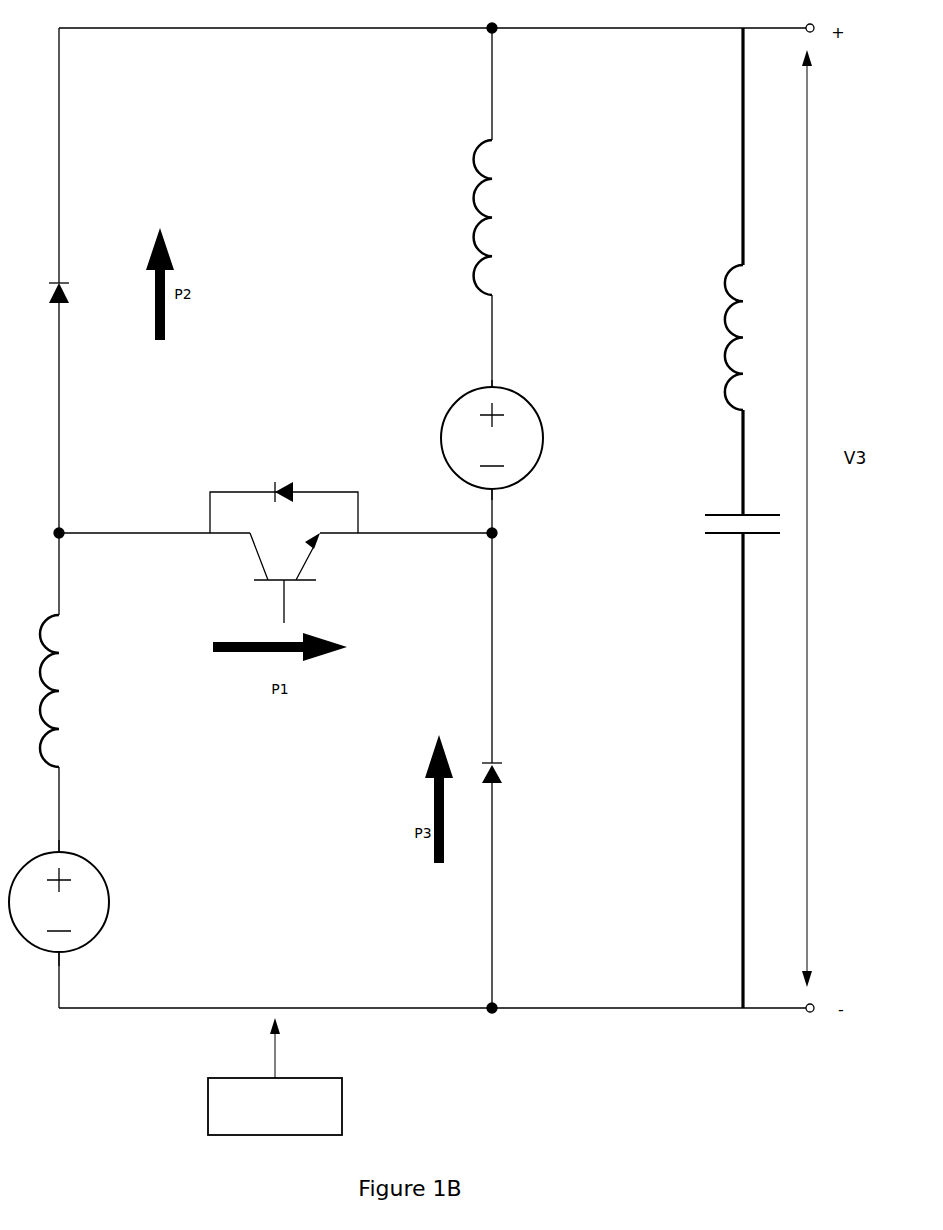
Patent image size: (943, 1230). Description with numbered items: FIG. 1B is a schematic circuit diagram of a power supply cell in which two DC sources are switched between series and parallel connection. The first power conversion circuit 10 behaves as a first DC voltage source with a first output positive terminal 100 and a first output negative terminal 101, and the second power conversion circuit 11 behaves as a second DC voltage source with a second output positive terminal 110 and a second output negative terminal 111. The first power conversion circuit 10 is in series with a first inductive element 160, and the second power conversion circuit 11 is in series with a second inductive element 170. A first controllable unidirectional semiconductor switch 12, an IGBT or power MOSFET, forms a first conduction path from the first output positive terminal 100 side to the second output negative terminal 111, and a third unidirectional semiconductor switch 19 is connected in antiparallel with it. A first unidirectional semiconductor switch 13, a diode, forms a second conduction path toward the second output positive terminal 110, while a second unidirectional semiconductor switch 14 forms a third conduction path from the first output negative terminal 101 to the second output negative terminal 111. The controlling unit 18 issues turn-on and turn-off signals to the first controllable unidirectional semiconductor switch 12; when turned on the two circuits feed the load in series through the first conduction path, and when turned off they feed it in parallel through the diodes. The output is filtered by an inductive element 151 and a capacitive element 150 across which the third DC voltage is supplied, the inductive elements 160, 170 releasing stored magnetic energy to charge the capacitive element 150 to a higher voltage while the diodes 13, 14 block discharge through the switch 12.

The first power conversion circuit 10 is at (76, 906).
The second power conversion circuit 11 is at (444, 438).
The first controllable unidirectional semiconductor switch 12 is at (290, 570).
The first unidirectional semiconductor switch 13 is at (70, 292).
The second unidirectional semiconductor switch 14 is at (502, 783).
The controlling unit 18 is at (275, 1076).
The third unidirectional semiconductor switch 19 is at (282, 486).
The first output positive terminal 100 is at (60, 842).
The first output negative terminal 101 is at (60, 954).
The second output positive terminal 110 is at (490, 385).
The second output negative terminal 111 is at (468, 488).
The first capacitive element 150 is at (728, 524).
The inductive element 151 is at (732, 320).
The first inductive element 160 is at (48, 680).
The second inductive element 170 is at (480, 196).